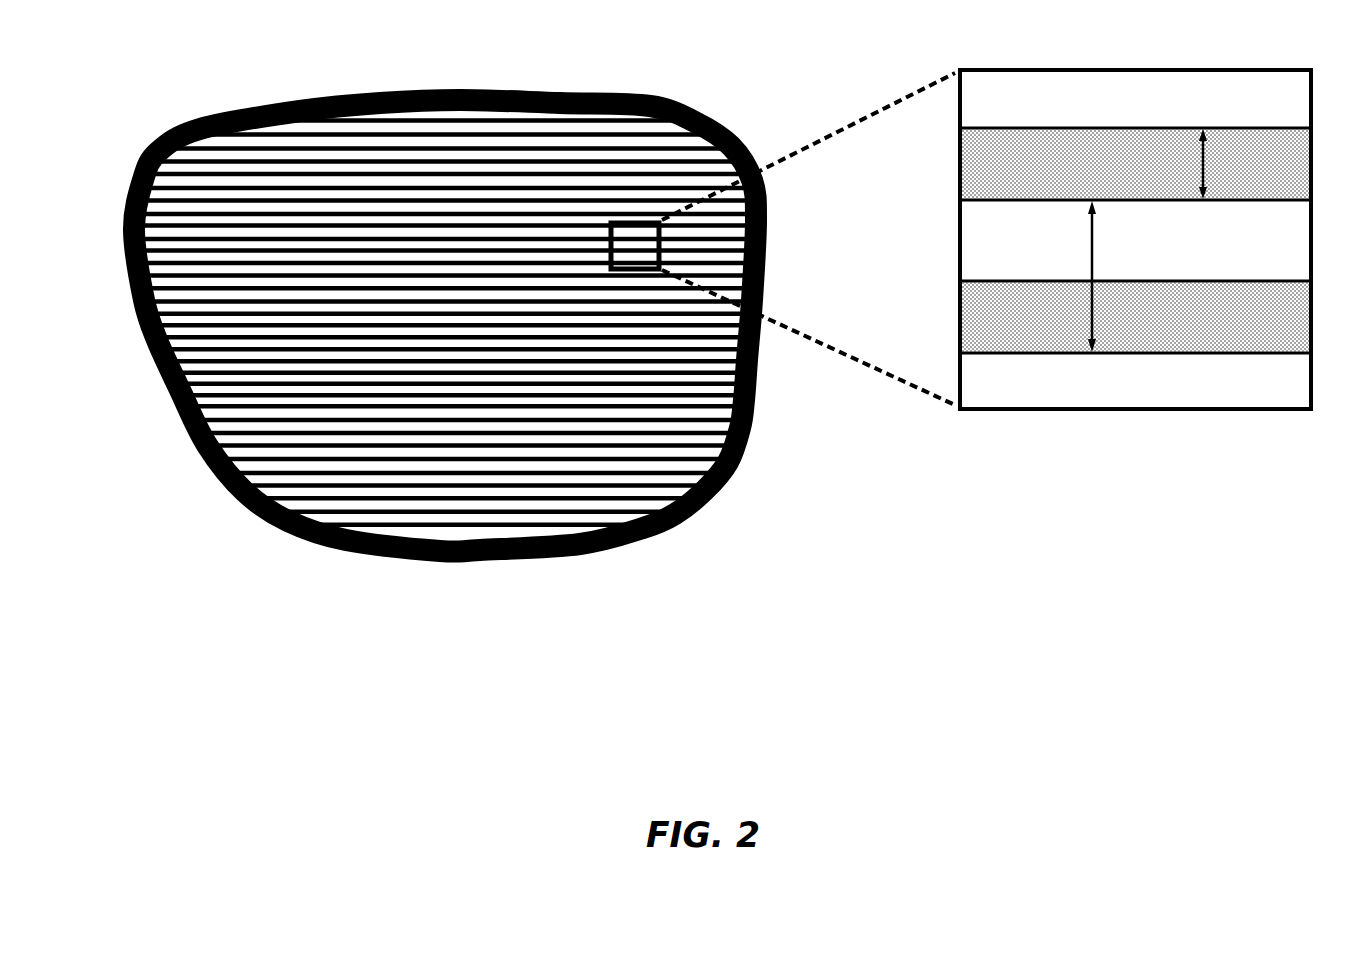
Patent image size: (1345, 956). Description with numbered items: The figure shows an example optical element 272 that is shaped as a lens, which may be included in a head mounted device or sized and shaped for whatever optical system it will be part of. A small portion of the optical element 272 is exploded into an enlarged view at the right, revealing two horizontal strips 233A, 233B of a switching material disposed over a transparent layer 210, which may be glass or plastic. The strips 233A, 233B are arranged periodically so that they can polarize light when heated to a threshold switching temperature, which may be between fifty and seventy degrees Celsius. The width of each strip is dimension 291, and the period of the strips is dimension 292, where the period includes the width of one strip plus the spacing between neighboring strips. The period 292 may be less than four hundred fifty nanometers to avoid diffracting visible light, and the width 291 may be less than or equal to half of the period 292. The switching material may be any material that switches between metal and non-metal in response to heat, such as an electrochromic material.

The optical element 272 is at (593, 92).
The transparent layer 210 is at (1142, 110).
The horizontal strip 233A is at (1050, 176).
The horizontal strip 233B is at (1255, 330).
The width of the strips 291 is at (1181, 164).
The period of the strips 292 is at (1110, 276).